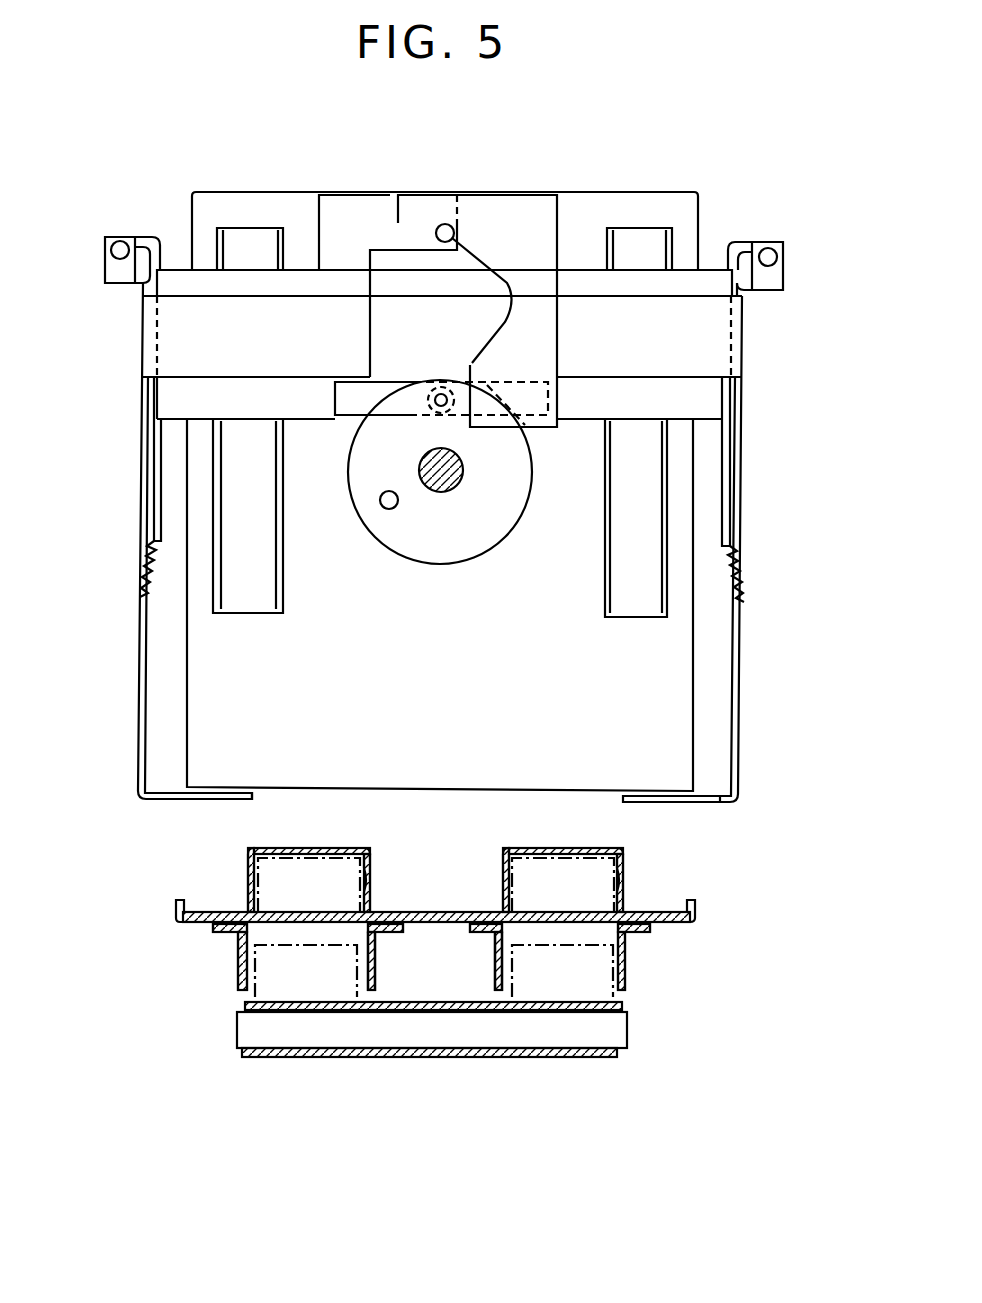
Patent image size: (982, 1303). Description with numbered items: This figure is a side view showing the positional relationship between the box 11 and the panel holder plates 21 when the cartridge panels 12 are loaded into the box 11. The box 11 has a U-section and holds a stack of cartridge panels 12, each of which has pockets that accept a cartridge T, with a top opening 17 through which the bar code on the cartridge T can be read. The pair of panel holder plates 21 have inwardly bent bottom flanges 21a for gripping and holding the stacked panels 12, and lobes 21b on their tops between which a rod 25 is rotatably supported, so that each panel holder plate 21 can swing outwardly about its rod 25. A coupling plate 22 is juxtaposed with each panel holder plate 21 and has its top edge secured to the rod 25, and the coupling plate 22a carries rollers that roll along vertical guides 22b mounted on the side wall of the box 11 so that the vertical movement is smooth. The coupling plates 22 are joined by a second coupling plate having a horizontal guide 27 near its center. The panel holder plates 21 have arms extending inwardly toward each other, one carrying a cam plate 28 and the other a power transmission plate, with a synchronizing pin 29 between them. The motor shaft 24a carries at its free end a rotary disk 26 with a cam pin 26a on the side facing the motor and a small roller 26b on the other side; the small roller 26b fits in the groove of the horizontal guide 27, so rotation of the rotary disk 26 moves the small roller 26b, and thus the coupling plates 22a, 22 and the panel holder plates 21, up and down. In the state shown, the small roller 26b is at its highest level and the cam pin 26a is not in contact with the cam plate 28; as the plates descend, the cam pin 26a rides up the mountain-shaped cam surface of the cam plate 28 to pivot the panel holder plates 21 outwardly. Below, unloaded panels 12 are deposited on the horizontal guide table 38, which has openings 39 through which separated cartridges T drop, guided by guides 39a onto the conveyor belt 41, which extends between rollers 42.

The box 11 is at (628, 193).
The cartridge panel 12 is at (637, 902).
The top opening 17 is at (568, 848).
The panel holder plate 21 is at (172, 335).
The bottom flange 21a is at (185, 800).
The lobe 21b is at (775, 280).
The coupling plate 22 is at (157, 475).
The coupling plate 22a is at (718, 398).
The vertical guide 22b is at (245, 605).
The motor shaft 24a is at (455, 478).
The rod 25 is at (777, 253).
The rotary disk 26 is at (432, 553).
The cam pin 26a is at (385, 510).
The small roller 26b is at (440, 395).
The horizontal guide 27 is at (348, 390).
The cam plate 28 is at (358, 207).
The synchronizing pin 29 is at (443, 223).
The horizontal guide table 38 is at (690, 925).
The opening 39 is at (553, 927).
The guide 39a is at (383, 973).
The conveyor belt 41 is at (437, 995).
The roller 42 is at (297, 1040).
The cartridge T is at (262, 962).